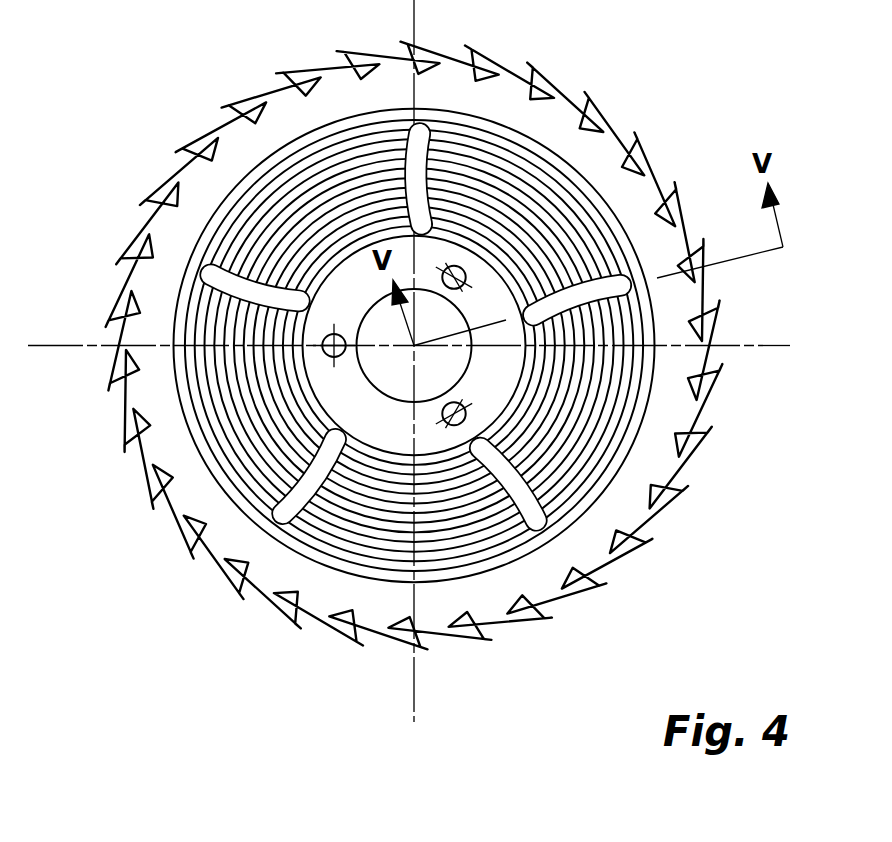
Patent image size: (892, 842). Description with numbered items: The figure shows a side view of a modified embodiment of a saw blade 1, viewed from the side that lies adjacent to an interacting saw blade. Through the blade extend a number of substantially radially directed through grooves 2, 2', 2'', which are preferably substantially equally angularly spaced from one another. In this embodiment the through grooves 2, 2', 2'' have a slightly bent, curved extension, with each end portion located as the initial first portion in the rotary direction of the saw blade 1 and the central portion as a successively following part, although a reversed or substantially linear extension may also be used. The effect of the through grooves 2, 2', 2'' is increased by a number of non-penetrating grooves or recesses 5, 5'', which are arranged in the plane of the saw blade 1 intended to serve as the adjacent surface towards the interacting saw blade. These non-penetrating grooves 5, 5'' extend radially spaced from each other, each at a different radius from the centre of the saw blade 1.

The saw blade 1 is at (593, 152).
The through groove 2 is at (541, 572).
The through groove 2' is at (274, 568).
The through groove 2'' is at (173, 254).
The non-penetrating groove 5 is at (533, 345).
The non-penetrating groove 5'' is at (554, 423).